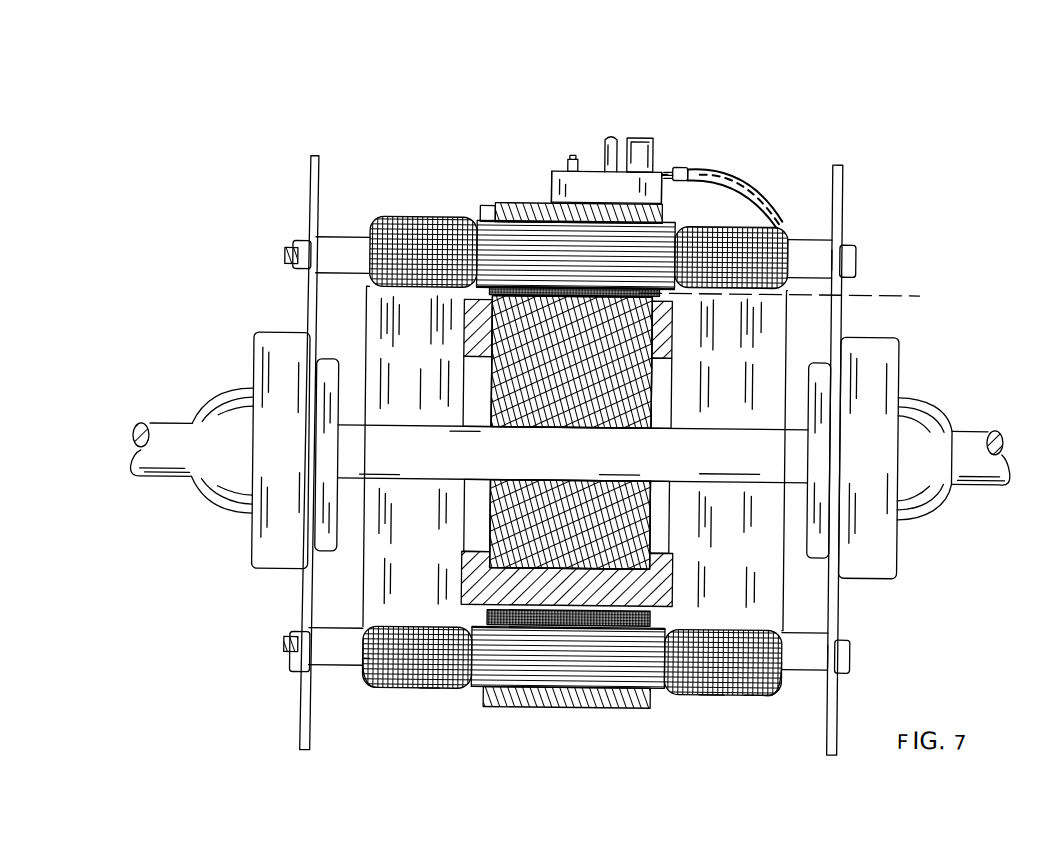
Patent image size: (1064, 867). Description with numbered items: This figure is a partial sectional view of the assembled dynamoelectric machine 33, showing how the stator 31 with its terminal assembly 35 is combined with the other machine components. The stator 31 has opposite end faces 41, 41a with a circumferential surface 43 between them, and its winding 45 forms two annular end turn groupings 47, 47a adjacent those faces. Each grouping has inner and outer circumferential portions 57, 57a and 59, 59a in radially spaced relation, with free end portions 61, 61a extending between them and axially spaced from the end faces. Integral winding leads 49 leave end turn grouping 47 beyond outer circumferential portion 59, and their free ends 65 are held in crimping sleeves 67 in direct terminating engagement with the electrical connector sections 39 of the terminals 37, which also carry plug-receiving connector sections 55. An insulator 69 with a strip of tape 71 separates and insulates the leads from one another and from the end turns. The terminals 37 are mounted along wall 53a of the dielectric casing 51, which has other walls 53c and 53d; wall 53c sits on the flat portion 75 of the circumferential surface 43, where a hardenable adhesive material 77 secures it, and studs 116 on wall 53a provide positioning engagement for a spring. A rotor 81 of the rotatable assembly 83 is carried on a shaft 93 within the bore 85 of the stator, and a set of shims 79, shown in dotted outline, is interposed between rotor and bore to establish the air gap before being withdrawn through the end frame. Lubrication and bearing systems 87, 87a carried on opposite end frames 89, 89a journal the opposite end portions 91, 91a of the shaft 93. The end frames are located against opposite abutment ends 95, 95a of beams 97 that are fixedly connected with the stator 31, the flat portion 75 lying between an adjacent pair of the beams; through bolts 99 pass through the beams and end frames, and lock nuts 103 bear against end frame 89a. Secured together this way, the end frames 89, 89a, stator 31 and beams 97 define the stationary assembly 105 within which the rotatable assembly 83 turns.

The dynamoelectric machine 33 is at (933, 199).
The terminal assembly 35 is at (549, 138).
The stator 31 is at (574, 263).
The terminals 37 is at (609, 135).
The electrical connector section 39 is at (657, 171).
The end face 41 is at (651, 706).
The end face 41a is at (498, 706).
The circumferential surface 43 is at (583, 708).
The winding 45 is at (371, 714).
The end turn grouping 47 is at (763, 695).
The end turn grouping 47a is at (396, 691).
The integral winding leads 49 is at (780, 222).
The casing 51 is at (626, 199).
The wall 53a is at (553, 171).
The wall 53c is at (565, 204).
The wall 53d is at (661, 191).
The electrical connector section 55 is at (637, 137).
The inner circumferential portion 57 is at (740, 628).
The inner circumferential portion 57a is at (420, 626).
The outer circumferential portion 59 is at (719, 695).
The outer circumferential portion 59a is at (433, 692).
The free end portion 61 is at (786, 685).
The free end portion 61a is at (365, 682).
The free ends 65 is at (689, 174).
The crimping sleeve 67 is at (680, 166).
The insulator 69 is at (724, 182).
The tape 71 is at (754, 185).
The flat portion 75 is at (494, 206).
The hardenable adhesive material 77 is at (588, 223).
The shims 79 is at (903, 291).
The rotor 81 is at (582, 385).
The rotatable assembly 83 is at (452, 359).
The bore 85 is at (539, 296).
The lubrication and bearing system 87 is at (984, 376).
The lubrication and bearing system 87a is at (221, 387).
The end frame 89 is at (840, 167).
The end frame 89a is at (308, 165).
The shaft end portion 91 is at (1003, 432).
The shaft end portion 91a is at (157, 427).
The shaft 93 is at (579, 459).
The abutment ends 95 is at (834, 245).
The abutment ends 95a is at (310, 243).
The beams 97 is at (344, 244).
The through bolts 99 is at (854, 254).
The lock nuts 103 is at (297, 246).
The stationary assembly 105 is at (410, 213).
The studs 116 is at (570, 155).